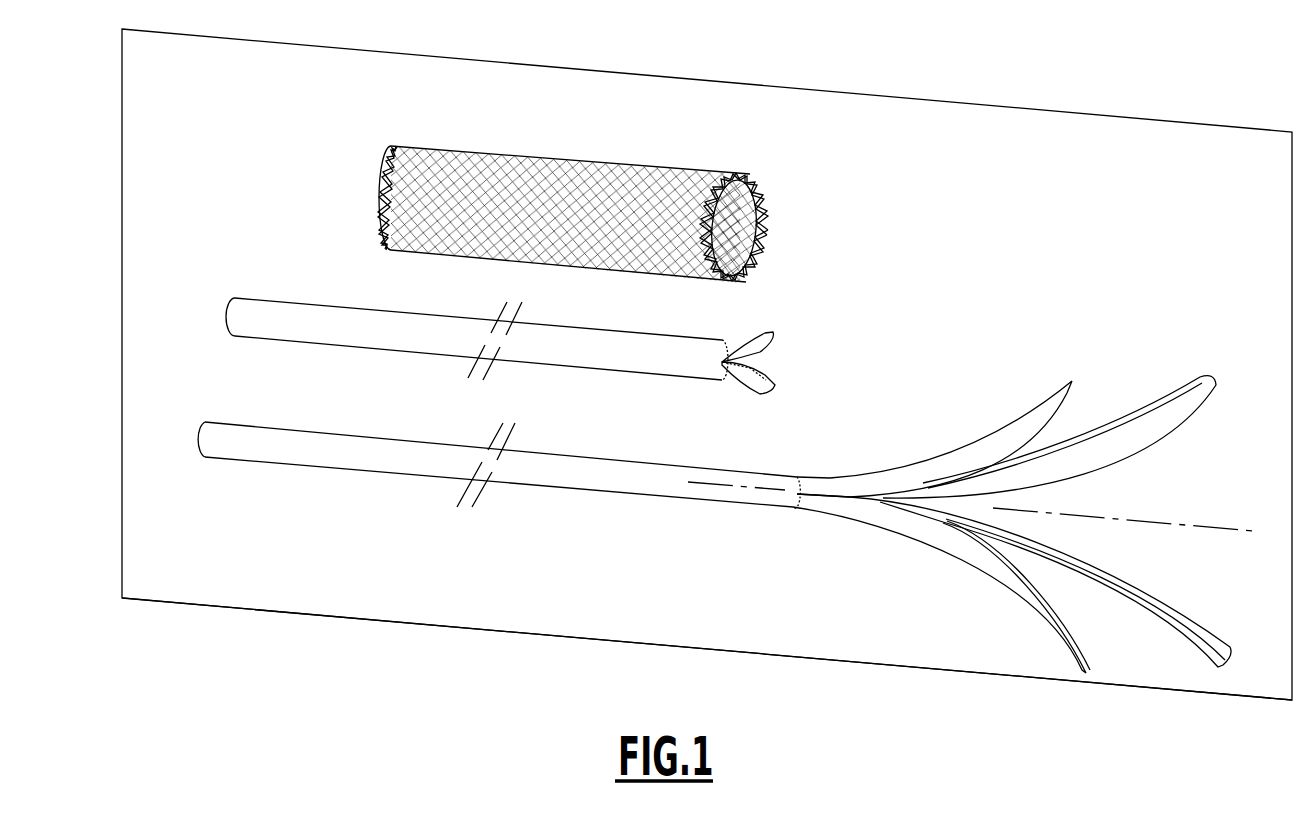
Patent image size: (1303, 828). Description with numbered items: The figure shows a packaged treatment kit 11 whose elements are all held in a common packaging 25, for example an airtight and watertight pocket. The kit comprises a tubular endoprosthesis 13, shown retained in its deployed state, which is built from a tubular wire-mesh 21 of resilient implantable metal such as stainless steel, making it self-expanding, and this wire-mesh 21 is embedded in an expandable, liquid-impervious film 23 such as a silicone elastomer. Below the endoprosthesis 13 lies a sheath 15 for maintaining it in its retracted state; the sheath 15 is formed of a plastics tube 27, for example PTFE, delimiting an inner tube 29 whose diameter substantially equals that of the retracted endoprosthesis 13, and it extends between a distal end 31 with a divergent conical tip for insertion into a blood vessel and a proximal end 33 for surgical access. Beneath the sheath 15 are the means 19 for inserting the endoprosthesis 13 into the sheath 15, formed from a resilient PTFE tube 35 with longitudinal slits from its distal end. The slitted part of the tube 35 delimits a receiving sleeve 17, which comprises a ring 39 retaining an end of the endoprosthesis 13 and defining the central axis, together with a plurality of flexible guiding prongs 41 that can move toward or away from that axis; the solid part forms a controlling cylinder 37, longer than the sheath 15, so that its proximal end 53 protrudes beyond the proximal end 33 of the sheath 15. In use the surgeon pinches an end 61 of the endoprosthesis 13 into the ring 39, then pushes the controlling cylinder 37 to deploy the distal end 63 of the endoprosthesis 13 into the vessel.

The treatment kit 11 is at (918, 99).
The tubular endoprosthesis 13 is at (577, 189).
The sheath 15 is at (526, 315).
The sleeve 17 is at (1033, 413).
The means for inserting the endoprosthesis into the sheath 19 is at (716, 495).
The tubular wire-mesh 21 is at (762, 198).
The expandable film 23 is at (652, 185).
The packaging 25 is at (520, 633).
The tube 27 is at (572, 357).
The inner tube 29 is at (672, 357).
The distal end 31 is at (775, 337).
The proximal end 33 is at (224, 317).
The resilient tube 35 is at (810, 510).
The cylinder for controlling the movement of the endoprosthesis 37 is at (560, 472).
The ring 39 is at (835, 478).
The flexible guiding prongs 41 is at (968, 458).
The proximal end 53 is at (193, 437).
The end 61 is at (383, 176).
The distal end 63 is at (764, 254).